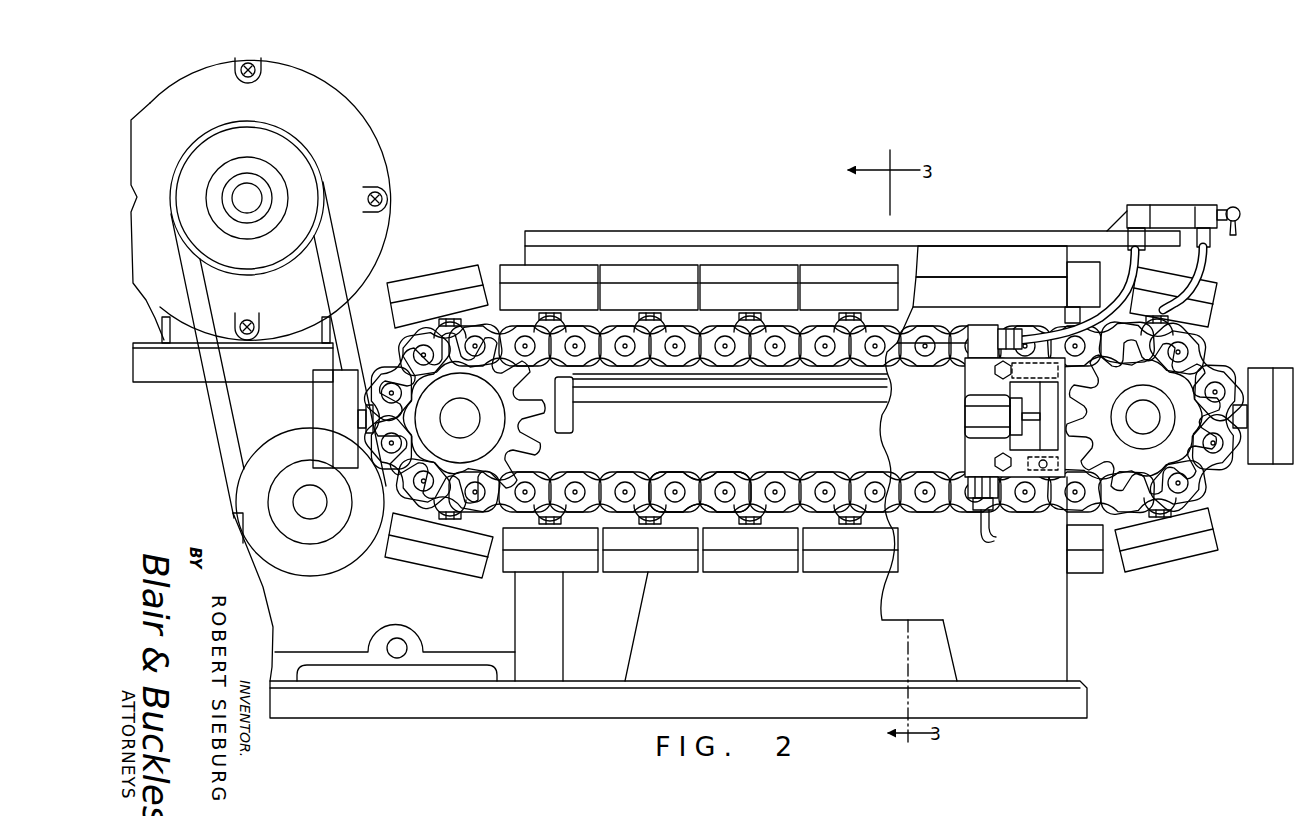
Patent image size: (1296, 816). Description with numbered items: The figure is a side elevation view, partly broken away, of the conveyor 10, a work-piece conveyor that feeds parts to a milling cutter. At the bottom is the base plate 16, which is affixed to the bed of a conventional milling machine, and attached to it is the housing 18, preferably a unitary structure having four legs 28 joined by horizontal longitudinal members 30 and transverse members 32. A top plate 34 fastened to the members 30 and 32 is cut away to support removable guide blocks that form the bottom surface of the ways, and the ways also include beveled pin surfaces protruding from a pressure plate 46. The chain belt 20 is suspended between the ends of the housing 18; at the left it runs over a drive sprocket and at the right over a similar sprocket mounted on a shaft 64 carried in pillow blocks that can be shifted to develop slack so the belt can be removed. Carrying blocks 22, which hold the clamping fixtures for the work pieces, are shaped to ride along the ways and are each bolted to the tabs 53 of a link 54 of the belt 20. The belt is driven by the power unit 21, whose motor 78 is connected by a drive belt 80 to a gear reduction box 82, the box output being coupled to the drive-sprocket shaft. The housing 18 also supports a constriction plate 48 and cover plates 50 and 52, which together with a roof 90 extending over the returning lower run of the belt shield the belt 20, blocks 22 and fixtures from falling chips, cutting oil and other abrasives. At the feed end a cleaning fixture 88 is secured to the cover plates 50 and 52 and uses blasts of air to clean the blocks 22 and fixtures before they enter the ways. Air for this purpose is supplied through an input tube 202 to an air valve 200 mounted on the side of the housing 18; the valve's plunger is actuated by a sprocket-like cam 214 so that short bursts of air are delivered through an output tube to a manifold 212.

The conveyor 10 is at (1158, 603).
The base plate 16 is at (1083, 699).
The housing 18 is at (893, 452).
The chain belt 20 is at (705, 482).
The power unit 21 is at (198, 422).
The carrying blocks 22 is at (458, 280).
The legs 28 is at (516, 616).
The horizontal longitudinal members 30 is at (887, 428).
The transverse members 32 is at (576, 419).
The top plate 34 is at (946, 334).
The pressure plate 46 is at (983, 301).
The constriction plate 48 is at (990, 269).
The cover plate 50 is at (1006, 232).
The cover plate 52 is at (640, 233).
The tabs 53 is at (680, 532).
The link 54 is at (668, 470).
The shaft 64 is at (1150, 412).
The motor 78 is at (290, 104).
The drive belt 80 is at (334, 248).
The gear reduction box 82 is at (316, 622).
The cleaning fixture 88 is at (1178, 200).
The roof 90 is at (700, 398).
The air valve 200 is at (962, 406).
The input tube 202 is at (990, 525).
The manifold 212 is at (1165, 205).
The sprocket-like cam 214 is at (1155, 382).